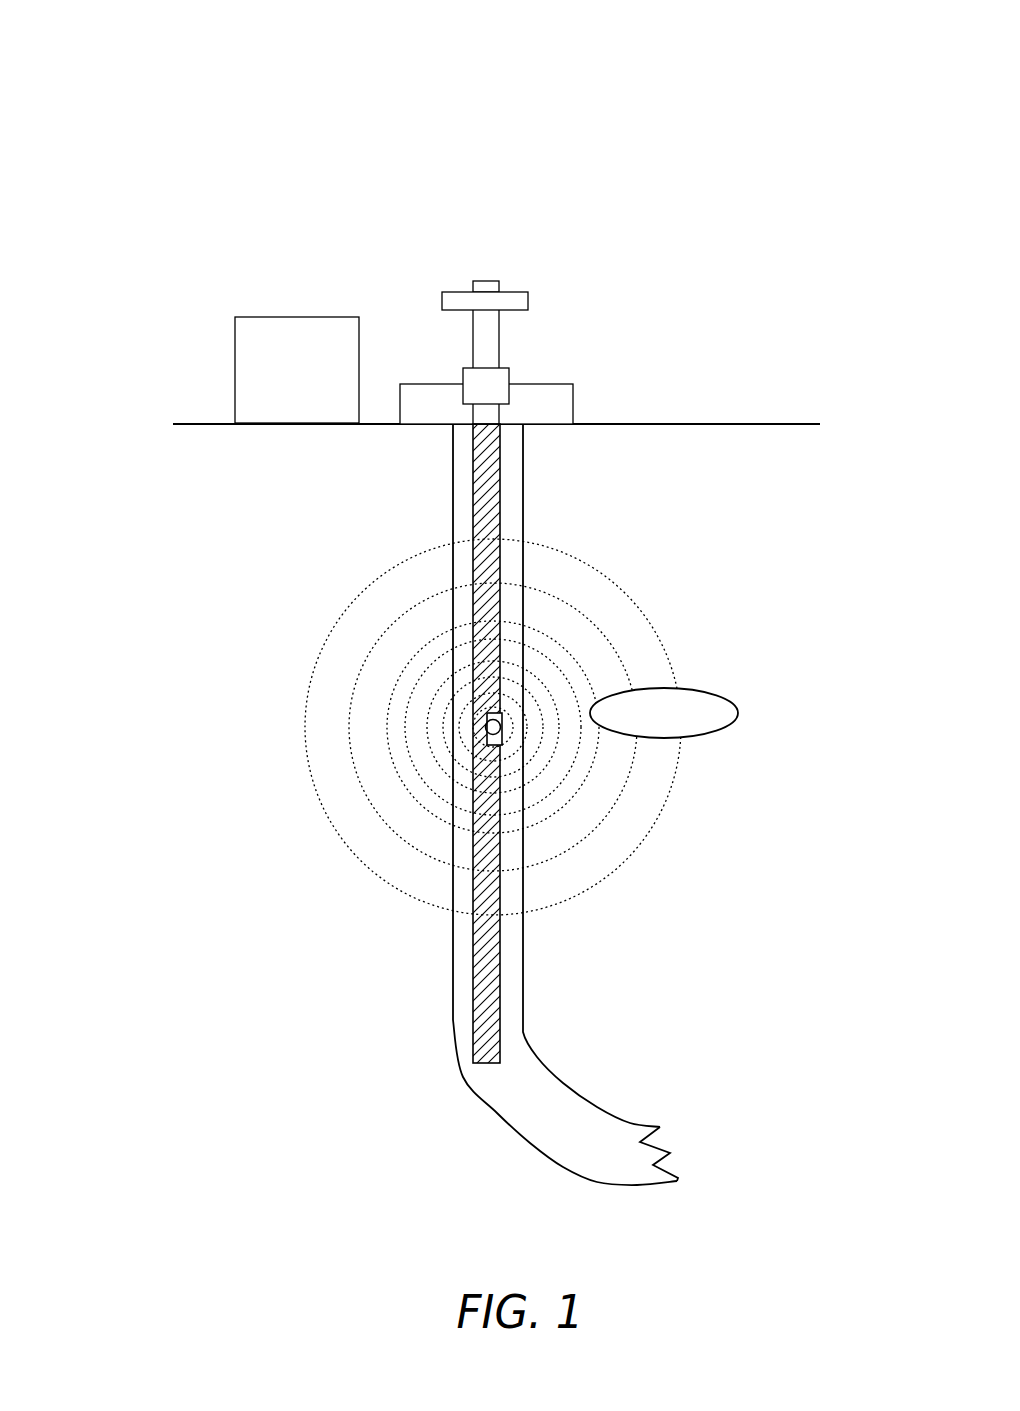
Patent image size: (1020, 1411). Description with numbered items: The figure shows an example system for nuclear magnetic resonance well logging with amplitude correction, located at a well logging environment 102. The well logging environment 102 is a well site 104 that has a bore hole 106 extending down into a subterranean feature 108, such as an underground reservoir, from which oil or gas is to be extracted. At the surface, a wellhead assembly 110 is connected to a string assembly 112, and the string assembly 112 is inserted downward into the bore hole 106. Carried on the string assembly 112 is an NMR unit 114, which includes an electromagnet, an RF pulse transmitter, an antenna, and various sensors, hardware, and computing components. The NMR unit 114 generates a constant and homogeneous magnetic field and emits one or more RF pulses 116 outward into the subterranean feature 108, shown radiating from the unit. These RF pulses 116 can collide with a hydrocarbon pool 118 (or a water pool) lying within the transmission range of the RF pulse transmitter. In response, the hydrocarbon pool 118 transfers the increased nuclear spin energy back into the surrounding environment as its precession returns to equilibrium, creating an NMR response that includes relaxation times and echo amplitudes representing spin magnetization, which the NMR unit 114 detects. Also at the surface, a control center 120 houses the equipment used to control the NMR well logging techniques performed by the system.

The well logging environment 102 is at (416, 110).
The well site 104 is at (601, 385).
The bore hole 106 is at (453, 983).
The subterranean feature 108 is at (710, 538).
The wellhead assembly 110 is at (508, 292).
The string assembly 112 is at (473, 500).
The NMR unit 114 is at (487, 727).
The RF pulses 116 is at (640, 855).
The hydrocarbon pool 118 is at (710, 692).
The control center 120 is at (235, 348).